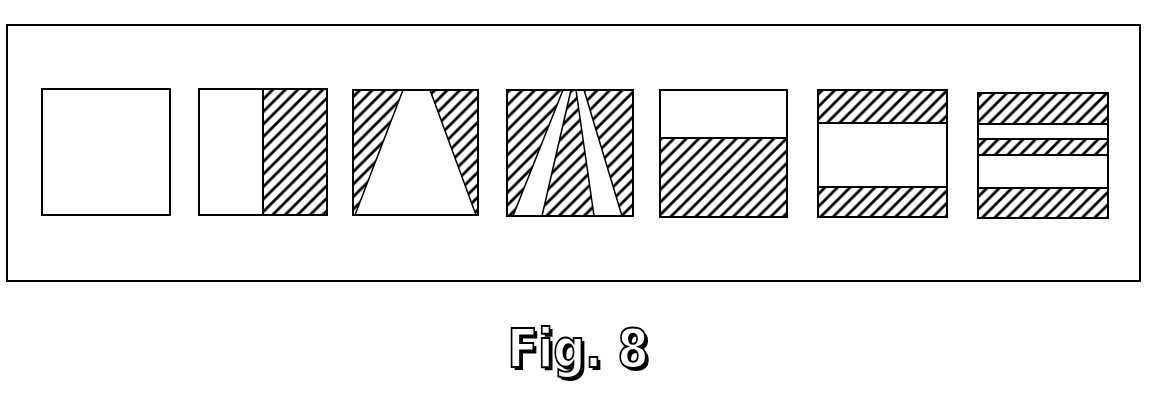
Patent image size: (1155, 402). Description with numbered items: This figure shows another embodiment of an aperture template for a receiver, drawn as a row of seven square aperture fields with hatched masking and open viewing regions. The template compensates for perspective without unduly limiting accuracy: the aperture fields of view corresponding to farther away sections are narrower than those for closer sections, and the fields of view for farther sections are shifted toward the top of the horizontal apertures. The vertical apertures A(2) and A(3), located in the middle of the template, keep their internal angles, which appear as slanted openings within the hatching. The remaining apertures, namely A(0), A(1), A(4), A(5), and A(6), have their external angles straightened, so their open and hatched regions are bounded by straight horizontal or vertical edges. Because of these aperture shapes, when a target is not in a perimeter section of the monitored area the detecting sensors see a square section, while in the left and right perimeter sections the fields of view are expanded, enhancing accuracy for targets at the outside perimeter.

The aperture A 0 is at (106, 129).
The aperture A 1 is at (263, 130).
The vertical aperture A 2 is at (415, 130).
The vertical aperture A 3 is at (570, 131).
The aperture A 4 is at (723, 132).
The aperture A 5 is at (882, 132).
The aperture A 6 is at (1043, 133).